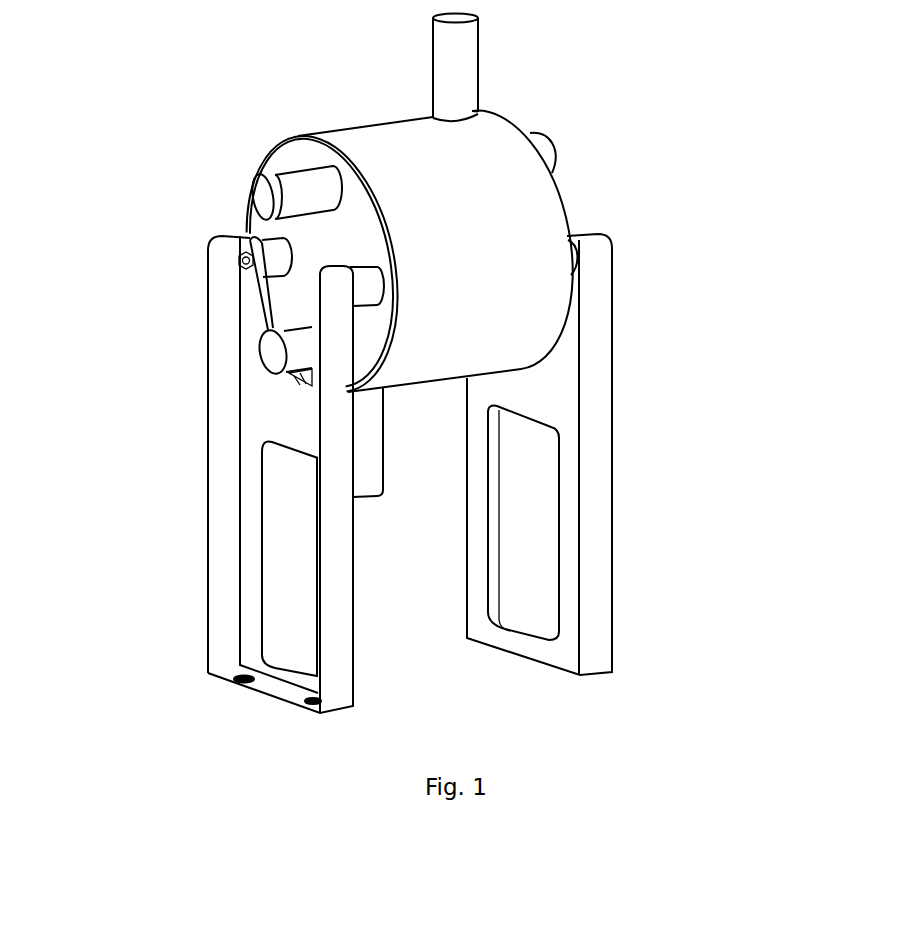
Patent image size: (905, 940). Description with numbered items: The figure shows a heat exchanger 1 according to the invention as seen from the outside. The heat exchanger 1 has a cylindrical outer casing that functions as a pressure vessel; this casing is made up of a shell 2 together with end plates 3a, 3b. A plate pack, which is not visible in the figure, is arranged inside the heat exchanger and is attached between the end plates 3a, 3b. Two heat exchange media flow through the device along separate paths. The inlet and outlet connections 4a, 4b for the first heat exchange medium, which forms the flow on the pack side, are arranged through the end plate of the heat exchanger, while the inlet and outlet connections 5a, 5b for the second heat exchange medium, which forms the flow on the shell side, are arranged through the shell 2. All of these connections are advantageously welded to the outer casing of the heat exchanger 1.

The heat exchanger 1 is at (127, 170).
The shell 2 is at (387, 138).
The end plate 3a is at (287, 296).
The end plate 3b is at (566, 192).
The inlet connection for first heat exchange medium 4a is at (305, 182).
The outlet connection for first heat exchange medium 4b is at (297, 347).
The inlet connection for second heat exchange medium 5a is at (455, 70).
The outlet connection for second heat exchange medium 5b is at (368, 457).